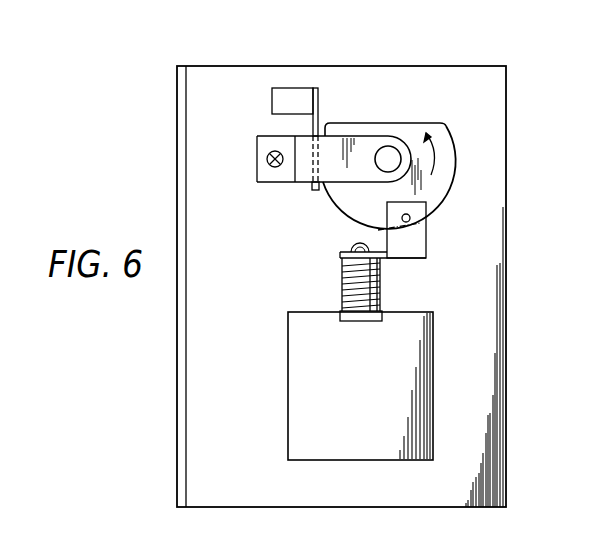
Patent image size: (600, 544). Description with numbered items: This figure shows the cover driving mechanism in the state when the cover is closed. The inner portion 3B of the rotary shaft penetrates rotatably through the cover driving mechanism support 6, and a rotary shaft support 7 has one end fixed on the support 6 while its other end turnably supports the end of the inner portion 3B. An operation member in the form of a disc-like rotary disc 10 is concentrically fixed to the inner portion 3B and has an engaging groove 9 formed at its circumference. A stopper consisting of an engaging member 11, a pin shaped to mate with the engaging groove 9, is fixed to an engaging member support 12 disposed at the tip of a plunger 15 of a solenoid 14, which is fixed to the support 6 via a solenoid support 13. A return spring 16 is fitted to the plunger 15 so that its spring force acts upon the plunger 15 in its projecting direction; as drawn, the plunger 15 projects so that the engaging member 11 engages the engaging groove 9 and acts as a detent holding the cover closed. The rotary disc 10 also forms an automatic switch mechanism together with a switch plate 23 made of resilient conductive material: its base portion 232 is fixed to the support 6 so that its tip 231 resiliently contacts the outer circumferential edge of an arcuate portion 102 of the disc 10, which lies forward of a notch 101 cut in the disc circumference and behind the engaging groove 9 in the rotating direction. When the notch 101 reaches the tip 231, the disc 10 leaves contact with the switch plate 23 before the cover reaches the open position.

The cover driving mechanism support 6 is at (292, 75).
The switch plate 23 is at (320, 120).
The base portion 232 is at (282, 103).
The tip 231 is at (313, 188).
The rotary shaft support 7 is at (268, 178).
The rotary disc 10 is at (372, 127).
The notch 101 is at (410, 122).
The arcuate portion 102 is at (345, 217).
The inner portion of the rotary shaft 3B is at (385, 162).
The engaging groove 9 is at (428, 225).
The engaging member support 12 is at (417, 244).
The engaging member 11 is at (406, 222).
The return spring 16 is at (358, 265).
The plunger 15 is at (380, 295).
The solenoid 14 is at (325, 391).
The solenoid support 13 is at (433, 378).